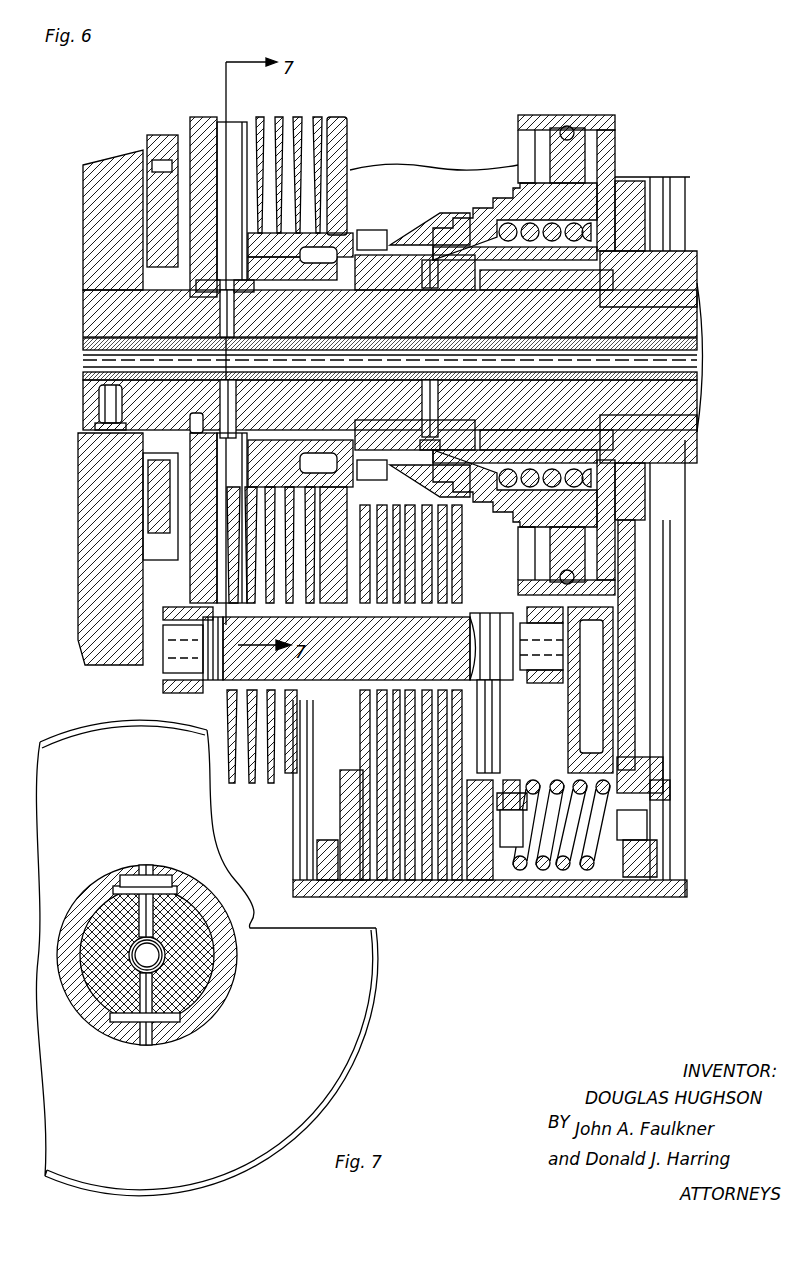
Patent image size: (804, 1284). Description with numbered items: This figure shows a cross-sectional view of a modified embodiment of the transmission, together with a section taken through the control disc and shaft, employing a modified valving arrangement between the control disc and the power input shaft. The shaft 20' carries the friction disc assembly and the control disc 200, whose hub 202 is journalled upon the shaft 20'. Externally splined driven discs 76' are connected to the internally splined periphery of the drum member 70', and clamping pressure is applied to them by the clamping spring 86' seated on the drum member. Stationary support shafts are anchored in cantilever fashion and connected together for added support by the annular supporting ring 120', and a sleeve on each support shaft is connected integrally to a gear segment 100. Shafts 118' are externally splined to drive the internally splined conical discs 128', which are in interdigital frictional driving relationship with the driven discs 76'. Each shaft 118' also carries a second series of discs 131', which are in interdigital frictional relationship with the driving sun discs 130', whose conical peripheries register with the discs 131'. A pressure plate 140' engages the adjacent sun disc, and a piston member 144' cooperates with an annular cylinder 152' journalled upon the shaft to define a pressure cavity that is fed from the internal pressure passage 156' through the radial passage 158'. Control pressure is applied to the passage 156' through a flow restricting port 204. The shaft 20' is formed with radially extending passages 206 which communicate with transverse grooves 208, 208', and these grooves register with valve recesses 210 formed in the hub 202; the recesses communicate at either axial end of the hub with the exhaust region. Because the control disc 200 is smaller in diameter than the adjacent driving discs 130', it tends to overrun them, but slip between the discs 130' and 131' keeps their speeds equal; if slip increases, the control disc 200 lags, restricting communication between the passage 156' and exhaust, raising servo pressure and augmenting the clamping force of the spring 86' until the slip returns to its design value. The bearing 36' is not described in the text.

In FIG. 6, the shaft 20' is at (91, 407).
In FIG. 7, the shaft 20' is at (180, 955).
In FIG. 7, the bearing 36' is at (206, 979).
In FIG. 6, the drum member 70' is at (490, 823).
In FIG. 6, the driven discs 76' is at (424, 805).
In FIG. 6, the clamping spring 86' is at (583, 850).
In FIG. 6, the gear segment 100 is at (164, 139).
In FIG. 6, the shaft 118' is at (363, 636).
In FIG. 6, the annular supporting ring 120' is at (573, 690).
In FIG. 6, the discs 128' is at (437, 554).
In FIG. 6, the driving sun discs 130' is at (229, 528).
In FIG. 6, the discs 131' is at (247, 545).
In FIG. 6, the pressure plate 140' is at (334, 176).
In FIG. 6, the piston member 144' is at (597, 355).
In FIG. 6, the annular cylinder 152' is at (558, 339).
In FIG. 6, the pressure passage 156' is at (393, 357).
In FIG. 7, the pressure passage 156' is at (204, 955).
In FIG. 6, the radial passage 158' is at (454, 417).
In FIG. 6, the control disc 200 is at (207, 115).
In FIG. 7, the control disc 200 is at (366, 998).
In FIG. 6, the hub 202 is at (197, 247).
In FIG. 7, the hub 202 is at (119, 872).
In FIG. 6, the flow restricting port 204 is at (98, 401).
In FIG. 6, the radially extending passages 206 is at (240, 296).
In FIG. 7, the radially extending passages 206 is at (152, 905).
In FIG. 7, the transverse grooves 208 is at (147, 954).
In FIG. 6, the transverse grooves 208' is at (184, 299).
In FIG. 7, the valve recesses 210 is at (150, 882).